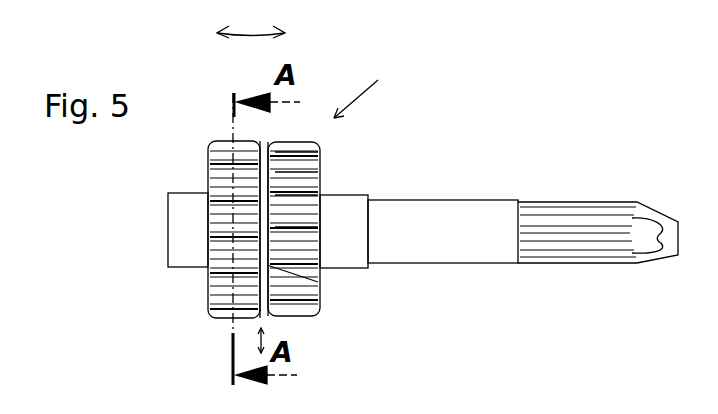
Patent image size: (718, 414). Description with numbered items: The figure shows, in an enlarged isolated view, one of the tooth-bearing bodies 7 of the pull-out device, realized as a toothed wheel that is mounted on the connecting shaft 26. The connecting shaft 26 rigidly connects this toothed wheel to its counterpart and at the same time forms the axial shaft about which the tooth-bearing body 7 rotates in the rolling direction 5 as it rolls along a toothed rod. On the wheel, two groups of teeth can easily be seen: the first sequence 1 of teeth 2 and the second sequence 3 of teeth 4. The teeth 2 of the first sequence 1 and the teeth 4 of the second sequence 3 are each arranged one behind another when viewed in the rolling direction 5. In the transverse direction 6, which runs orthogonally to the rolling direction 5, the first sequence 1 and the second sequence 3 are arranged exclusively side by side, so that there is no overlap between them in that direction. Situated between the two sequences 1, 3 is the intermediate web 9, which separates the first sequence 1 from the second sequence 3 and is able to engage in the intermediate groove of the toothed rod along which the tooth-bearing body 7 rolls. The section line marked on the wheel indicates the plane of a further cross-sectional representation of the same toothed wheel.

The gear wheel 1 is at (200, 310).
The first toothing 2 is at (208, 262).
The second toothing 3 is at (314, 318).
The teeth 4 is at (320, 226).
The axis of rotation 5 is at (240, 343).
The direction of movement 6 is at (255, 35).
The direction of rotation 7 is at (360, 97).
The tooth flank 9 is at (318, 282).
The shaft 26 is at (457, 212).